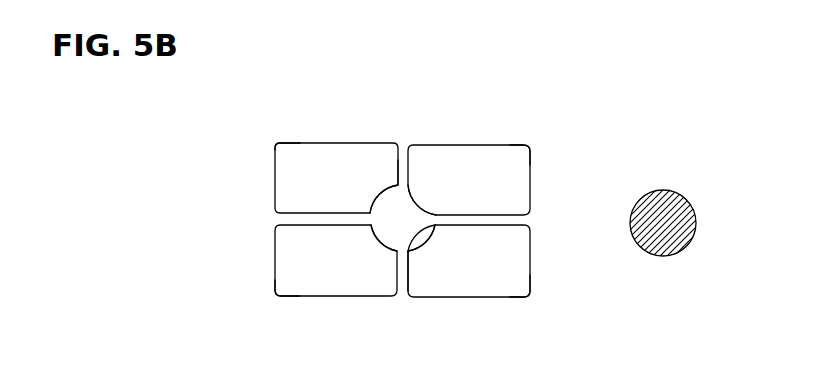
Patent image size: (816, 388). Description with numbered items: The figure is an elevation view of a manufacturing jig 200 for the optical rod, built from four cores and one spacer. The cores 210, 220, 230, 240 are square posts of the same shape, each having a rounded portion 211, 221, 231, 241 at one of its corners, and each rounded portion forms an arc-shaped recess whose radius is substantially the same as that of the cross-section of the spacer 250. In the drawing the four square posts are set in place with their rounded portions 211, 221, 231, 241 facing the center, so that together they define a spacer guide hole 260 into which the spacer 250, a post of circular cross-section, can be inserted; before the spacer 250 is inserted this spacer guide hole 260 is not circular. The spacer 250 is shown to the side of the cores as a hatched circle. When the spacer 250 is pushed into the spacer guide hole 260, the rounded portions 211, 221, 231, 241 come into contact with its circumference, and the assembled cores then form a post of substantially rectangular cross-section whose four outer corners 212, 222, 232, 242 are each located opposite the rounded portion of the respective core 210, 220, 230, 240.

The manufacturing jig 200 is at (140, 168).
The core 210 is at (322, 160).
The rounded portion 211 is at (382, 191).
The corner 212 is at (280, 143).
The core 220 is at (290, 262).
The rounded portion 221 is at (375, 245).
The corner 222 is at (275, 294).
The core 230 is at (473, 283).
The rounded portion 231 is at (416, 245).
The corner 232 is at (522, 297).
The core 240 is at (477, 160).
The rounded portion 241 is at (433, 212).
The corner 242 is at (530, 144).
The spacer 250 is at (640, 237).
The spacer guide hole 260 is at (418, 231).